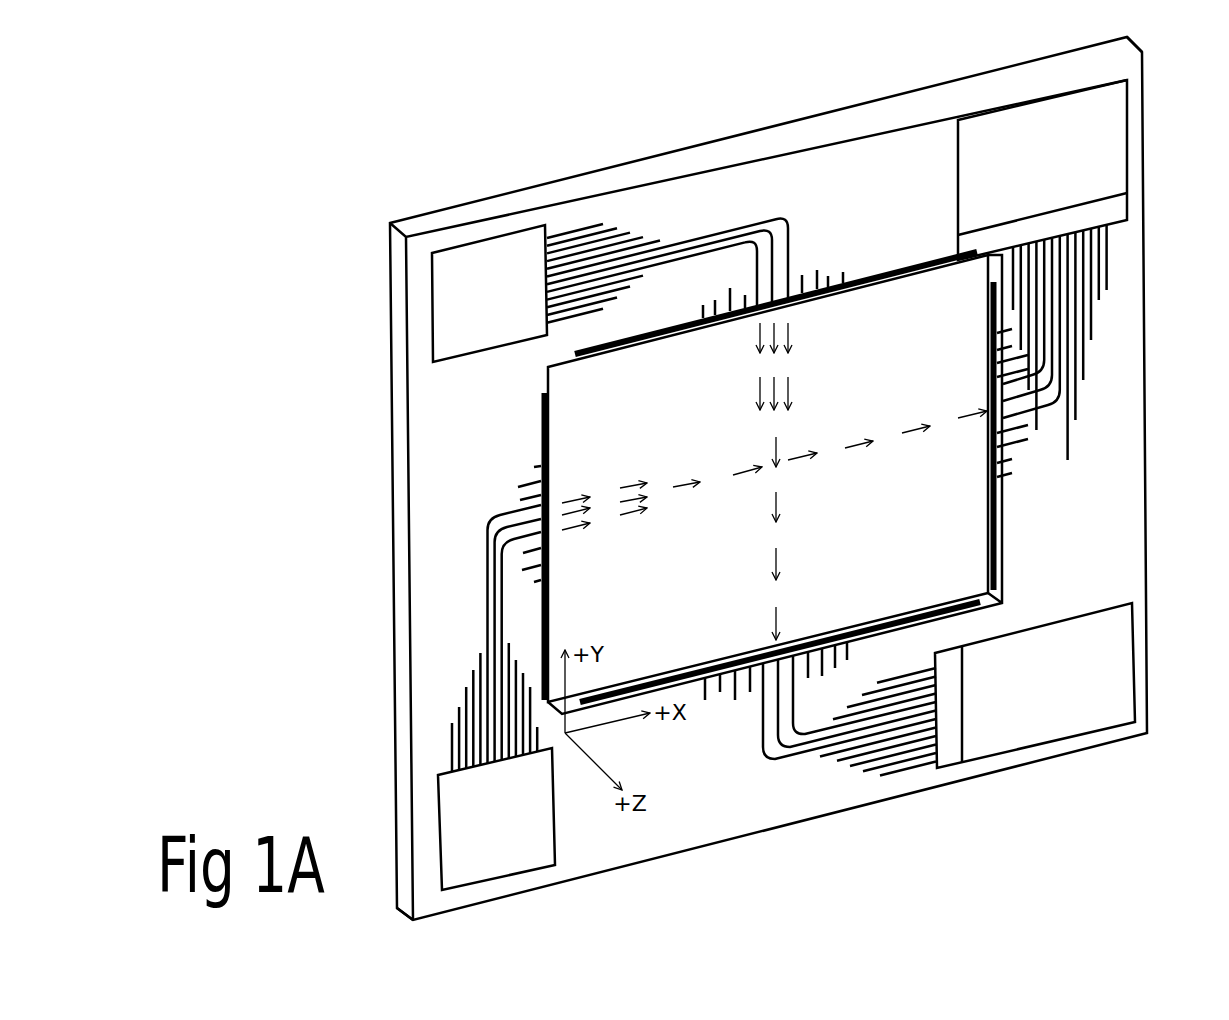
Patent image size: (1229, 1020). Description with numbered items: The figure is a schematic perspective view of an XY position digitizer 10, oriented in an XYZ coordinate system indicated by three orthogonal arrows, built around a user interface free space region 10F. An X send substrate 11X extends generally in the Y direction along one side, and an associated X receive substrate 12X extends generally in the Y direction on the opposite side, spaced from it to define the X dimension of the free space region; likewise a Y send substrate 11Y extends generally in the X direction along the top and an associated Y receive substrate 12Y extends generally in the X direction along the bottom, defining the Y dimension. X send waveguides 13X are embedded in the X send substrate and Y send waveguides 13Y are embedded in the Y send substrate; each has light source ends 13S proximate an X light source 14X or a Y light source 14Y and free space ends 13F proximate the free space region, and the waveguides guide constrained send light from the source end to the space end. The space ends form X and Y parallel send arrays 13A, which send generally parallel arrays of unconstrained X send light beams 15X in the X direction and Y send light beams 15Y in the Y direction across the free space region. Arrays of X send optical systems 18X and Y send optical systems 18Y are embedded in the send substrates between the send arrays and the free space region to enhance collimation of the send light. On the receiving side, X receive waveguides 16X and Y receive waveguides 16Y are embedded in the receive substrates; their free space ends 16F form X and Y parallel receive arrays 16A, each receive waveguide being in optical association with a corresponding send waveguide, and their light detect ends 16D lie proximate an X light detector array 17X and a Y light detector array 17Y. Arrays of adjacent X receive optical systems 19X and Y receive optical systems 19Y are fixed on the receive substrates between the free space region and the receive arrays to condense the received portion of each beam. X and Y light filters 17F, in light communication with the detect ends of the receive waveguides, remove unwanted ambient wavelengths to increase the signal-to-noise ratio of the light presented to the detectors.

The XY position digitizer 10 is at (320, 386).
The free space region 10F is at (664, 416).
The X send substrate 11X is at (433, 416).
The Y send substrate 11Y is at (832, 185).
The X receive substrate 12X is at (1063, 558).
The Y receive substrate 12Y is at (712, 786).
The parallel send arrays 13A is at (538, 466).
The free space ends of send waveguides 13F is at (557, 578).
The light source ends of send waveguides 13S is at (445, 770).
The X send waveguides 13X is at (485, 570).
The Y send waveguides 13Y is at (697, 229).
The X light source 14X is at (496, 819).
The Y light source 14Y is at (489, 293).
The X send light beams 15X is at (748, 477).
The Y send light beams 15Y is at (772, 525).
The parallel receive arrays 16A is at (1010, 478).
The light detect ends of receive waveguides 16D is at (1107, 228).
The free space ends of receive waveguides 16F is at (978, 342).
The X receive waveguides 16X is at (1070, 363).
The Y receive waveguides 16Y is at (788, 760).
The X and Y light filters 17F is at (1113, 211).
The X light detector array 17X is at (1042, 170).
The Y light detector array 17Y is at (1035, 685).
The X send optical systems 18X is at (553, 435).
The Y send optical systems 18Y is at (926, 275).
The X receive optical systems 19X is at (988, 558).
The Y receive optical systems 19Y is at (634, 684).